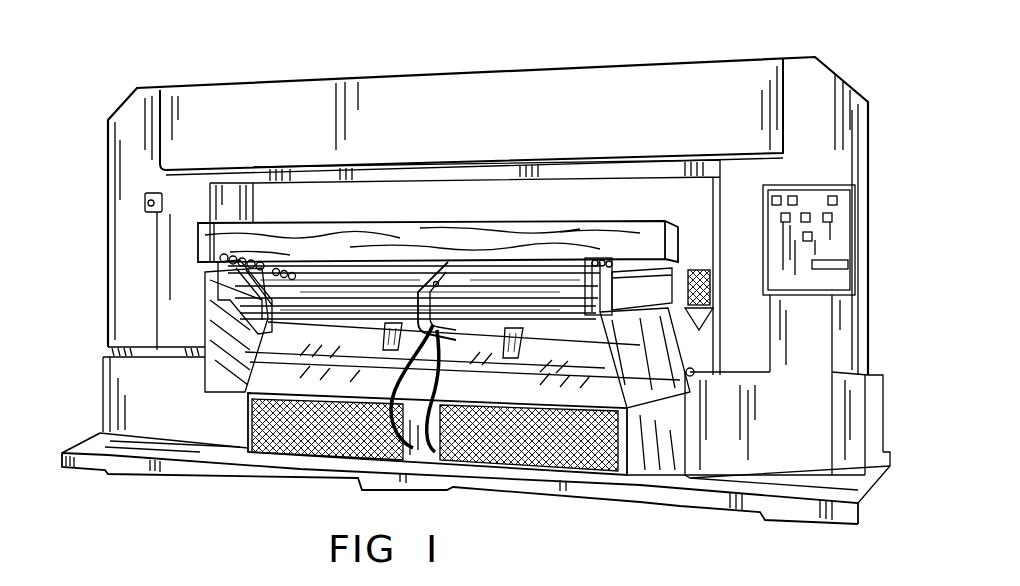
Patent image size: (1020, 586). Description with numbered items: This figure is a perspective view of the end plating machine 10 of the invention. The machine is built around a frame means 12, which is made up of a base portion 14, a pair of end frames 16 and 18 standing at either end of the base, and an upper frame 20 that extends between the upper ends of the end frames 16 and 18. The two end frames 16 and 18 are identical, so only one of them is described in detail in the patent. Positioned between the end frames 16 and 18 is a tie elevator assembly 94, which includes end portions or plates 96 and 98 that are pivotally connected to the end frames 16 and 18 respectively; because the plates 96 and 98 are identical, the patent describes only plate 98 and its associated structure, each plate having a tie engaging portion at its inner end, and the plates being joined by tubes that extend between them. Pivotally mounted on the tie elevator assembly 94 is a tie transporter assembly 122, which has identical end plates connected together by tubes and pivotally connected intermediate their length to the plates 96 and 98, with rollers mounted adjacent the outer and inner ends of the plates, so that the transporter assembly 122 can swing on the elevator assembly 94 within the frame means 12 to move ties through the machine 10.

The end plating machine 10 is at (490, 45).
The frame means 12 is at (871, 278).
The base portion 14 is at (588, 498).
The end frame 16 is at (130, 265).
The end frame 18 is at (846, 336).
The upper frame 20 is at (595, 108).
The tie elevator assembly 94 is at (238, 295).
The end portion (plate) 96 is at (172, 471).
The end portion (plate) 98 is at (585, 292).
The tie transporter assembly 122 is at (340, 262).